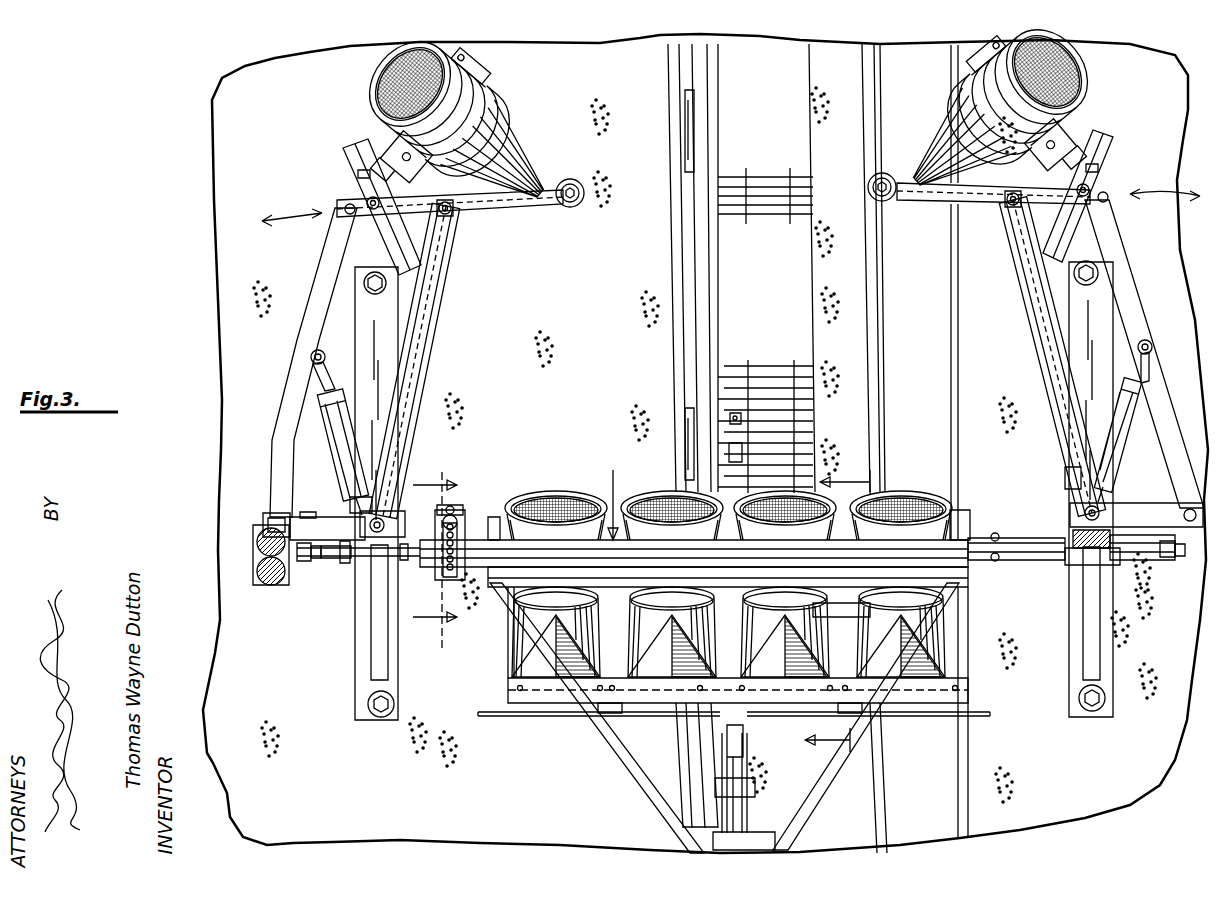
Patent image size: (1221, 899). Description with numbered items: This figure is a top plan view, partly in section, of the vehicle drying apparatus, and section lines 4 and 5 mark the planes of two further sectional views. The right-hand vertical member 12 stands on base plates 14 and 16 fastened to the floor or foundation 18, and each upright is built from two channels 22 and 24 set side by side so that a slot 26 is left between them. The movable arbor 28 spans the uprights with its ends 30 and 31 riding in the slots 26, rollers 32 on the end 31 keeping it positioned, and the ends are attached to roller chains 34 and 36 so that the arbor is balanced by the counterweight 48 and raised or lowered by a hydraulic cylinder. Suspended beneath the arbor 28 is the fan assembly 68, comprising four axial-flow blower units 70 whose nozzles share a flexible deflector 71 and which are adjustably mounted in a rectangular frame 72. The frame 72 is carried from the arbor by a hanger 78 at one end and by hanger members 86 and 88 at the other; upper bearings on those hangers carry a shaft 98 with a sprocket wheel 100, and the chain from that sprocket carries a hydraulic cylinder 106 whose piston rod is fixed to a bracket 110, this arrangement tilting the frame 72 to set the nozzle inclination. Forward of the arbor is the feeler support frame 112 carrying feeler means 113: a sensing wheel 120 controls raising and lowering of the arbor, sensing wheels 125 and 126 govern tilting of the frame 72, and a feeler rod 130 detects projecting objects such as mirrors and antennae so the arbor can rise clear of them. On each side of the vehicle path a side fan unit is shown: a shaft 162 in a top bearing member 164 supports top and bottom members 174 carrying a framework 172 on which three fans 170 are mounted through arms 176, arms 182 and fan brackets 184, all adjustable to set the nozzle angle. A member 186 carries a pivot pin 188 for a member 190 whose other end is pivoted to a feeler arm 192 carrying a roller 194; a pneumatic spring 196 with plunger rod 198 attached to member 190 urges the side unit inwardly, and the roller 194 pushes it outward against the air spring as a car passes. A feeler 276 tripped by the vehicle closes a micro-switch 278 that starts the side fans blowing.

The section line 4- 4 is at (837, 604).
The section line 5- 5 is at (448, 561).
The vertical member 12 is at (1072, 560).
The base plate 14 is at (370, 338).
The base plate 16 is at (1100, 314).
The floor or foundation 18 is at (222, 650).
The channel 22 is at (370, 540).
The channel 24 is at (336, 558).
The slot 26 is at (355, 563).
The arbor 28 is at (728, 518).
The arbor end 30 is at (406, 560).
The arbor end 31 is at (1100, 562).
The rollers 32 is at (1075, 535).
The roller chain 34 is at (302, 561).
The roller chain 36 is at (312, 558).
The counterweight 48 is at (262, 585).
The fan assembly 68 is at (506, 660).
The blower units 70 is at (585, 640).
The flexible deflector 71 is at (942, 705).
The rectangular frame 72 is at (972, 510).
The hanger 78 is at (1000, 561).
The hanger member 86 is at (458, 522).
The hanger member 88 is at (445, 578).
The shaft 98 is at (486, 575).
The sprocket wheel 100 is at (455, 577).
The hydraulic cylinder 106 is at (462, 508).
The bracket 110 is at (440, 510).
The feeler support frame 112 is at (645, 795).
The feeler means 113 is at (770, 785).
The sensing wheel 120 is at (755, 790).
The sensing wheel 125 is at (727, 740).
The sensing wheel 126 is at (713, 838).
The feeler rod 130 is at (486, 716).
The shaft 162 is at (358, 497).
The top bearing member 164 is at (400, 520).
The fans 170 is at (510, 160).
The framework 172 is at (348, 185).
The top and bottom members 174 is at (420, 342).
The top and bottom arms 176 is at (452, 214).
The arms 182 is at (392, 172).
The fan brackets 184 is at (365, 150).
The member 186 is at (318, 516).
The pivot pin 188 is at (270, 524).
The member 190 is at (305, 430).
The feeler arm 192 is at (480, 204).
The roller 194 is at (580, 182).
The pneumatic spring 196 is at (335, 456).
The plunger rod 198 is at (316, 390).
The feeler 276 is at (730, 418).
The micro-switch 278 is at (729, 446).